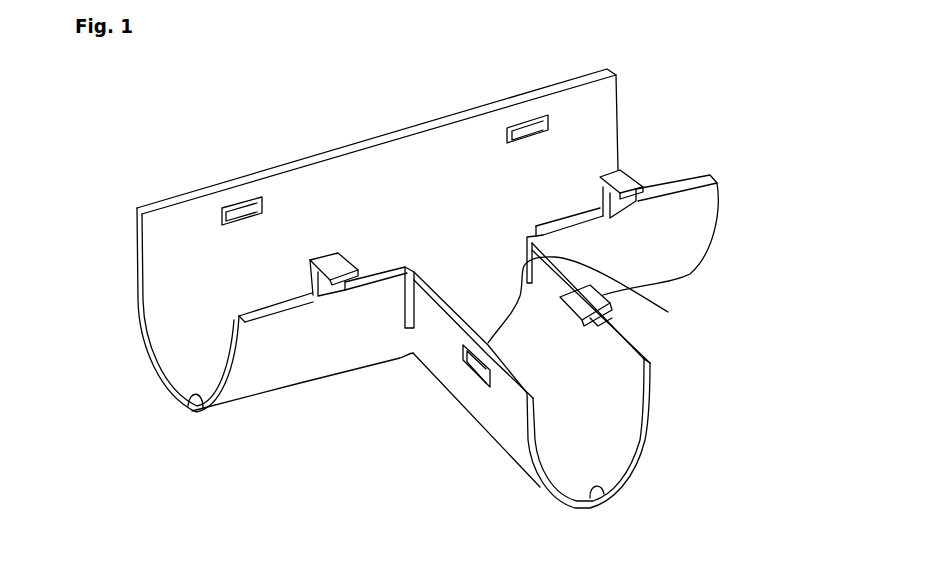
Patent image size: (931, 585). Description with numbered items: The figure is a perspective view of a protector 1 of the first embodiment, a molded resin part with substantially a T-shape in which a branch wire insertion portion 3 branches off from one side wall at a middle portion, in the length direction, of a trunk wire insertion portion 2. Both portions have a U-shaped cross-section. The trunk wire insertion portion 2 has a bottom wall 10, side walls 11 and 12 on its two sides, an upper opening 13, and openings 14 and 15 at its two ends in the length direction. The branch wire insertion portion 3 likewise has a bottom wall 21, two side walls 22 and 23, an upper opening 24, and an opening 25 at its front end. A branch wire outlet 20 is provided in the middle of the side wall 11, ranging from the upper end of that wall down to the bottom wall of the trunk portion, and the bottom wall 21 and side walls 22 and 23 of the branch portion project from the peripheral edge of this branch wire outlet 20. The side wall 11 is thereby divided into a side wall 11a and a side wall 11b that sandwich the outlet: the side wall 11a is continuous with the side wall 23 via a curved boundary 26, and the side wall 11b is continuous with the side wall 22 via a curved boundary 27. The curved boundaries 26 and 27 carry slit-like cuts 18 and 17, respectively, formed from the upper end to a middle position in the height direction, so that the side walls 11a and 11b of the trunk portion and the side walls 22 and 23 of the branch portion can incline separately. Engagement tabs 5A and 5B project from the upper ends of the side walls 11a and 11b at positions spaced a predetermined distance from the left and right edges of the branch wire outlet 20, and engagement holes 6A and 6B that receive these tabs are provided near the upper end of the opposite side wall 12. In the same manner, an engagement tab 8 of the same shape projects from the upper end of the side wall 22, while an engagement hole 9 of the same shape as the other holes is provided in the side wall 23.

The protector 1 is at (249, 88).
The trunk wire insertion portion 2 is at (172, 403).
The branch wire insertion portion 3 is at (478, 423).
The engagement tab 5A is at (310, 262).
The engagement tab 5B is at (630, 185).
The engagement hole 6A is at (247, 209).
The engagement hole 6B is at (525, 128).
The engagement tab 8 is at (618, 318).
The engagement hole 9 is at (478, 368).
The bottom wall 10 is at (203, 410).
The side wall 11 is at (367, 300).
The side wall 11a is at (295, 357).
The side wall 11b is at (677, 250).
The side wall 12 is at (137, 298).
The upper opening 13 is at (460, 178).
The opening 14 is at (173, 333).
The opening 15 is at (607, 133).
The slit-like cut 17 is at (537, 223).
The slit-like cut 18 is at (405, 298).
The branch wire outlet 20 is at (487, 277).
The bottom wall 21 is at (604, 494).
The side wall 22 is at (653, 406).
The side wall 23 is at (507, 418).
The upper opening 24 is at (607, 374).
The opening 25 is at (613, 430).
The curved boundary 26 is at (408, 333).
The curved boundary 27 is at (590, 284).